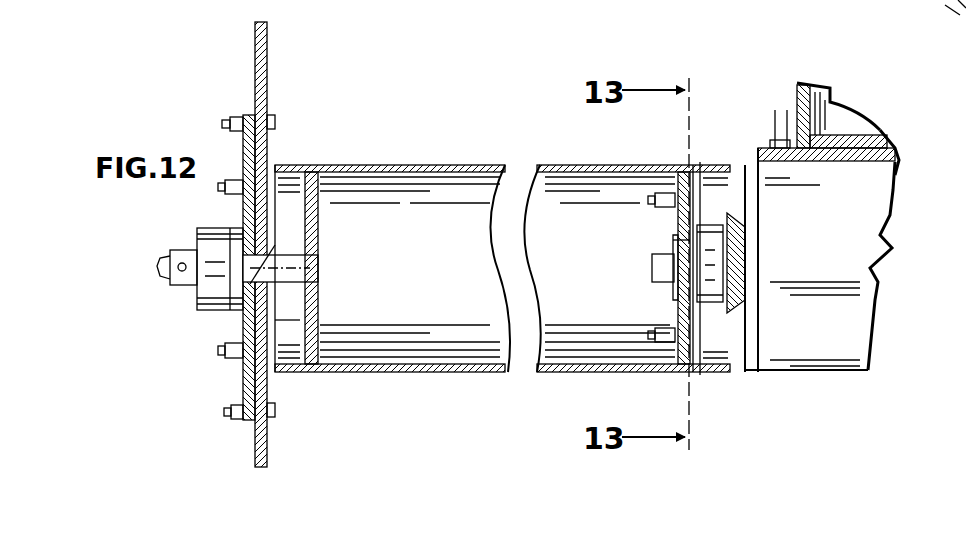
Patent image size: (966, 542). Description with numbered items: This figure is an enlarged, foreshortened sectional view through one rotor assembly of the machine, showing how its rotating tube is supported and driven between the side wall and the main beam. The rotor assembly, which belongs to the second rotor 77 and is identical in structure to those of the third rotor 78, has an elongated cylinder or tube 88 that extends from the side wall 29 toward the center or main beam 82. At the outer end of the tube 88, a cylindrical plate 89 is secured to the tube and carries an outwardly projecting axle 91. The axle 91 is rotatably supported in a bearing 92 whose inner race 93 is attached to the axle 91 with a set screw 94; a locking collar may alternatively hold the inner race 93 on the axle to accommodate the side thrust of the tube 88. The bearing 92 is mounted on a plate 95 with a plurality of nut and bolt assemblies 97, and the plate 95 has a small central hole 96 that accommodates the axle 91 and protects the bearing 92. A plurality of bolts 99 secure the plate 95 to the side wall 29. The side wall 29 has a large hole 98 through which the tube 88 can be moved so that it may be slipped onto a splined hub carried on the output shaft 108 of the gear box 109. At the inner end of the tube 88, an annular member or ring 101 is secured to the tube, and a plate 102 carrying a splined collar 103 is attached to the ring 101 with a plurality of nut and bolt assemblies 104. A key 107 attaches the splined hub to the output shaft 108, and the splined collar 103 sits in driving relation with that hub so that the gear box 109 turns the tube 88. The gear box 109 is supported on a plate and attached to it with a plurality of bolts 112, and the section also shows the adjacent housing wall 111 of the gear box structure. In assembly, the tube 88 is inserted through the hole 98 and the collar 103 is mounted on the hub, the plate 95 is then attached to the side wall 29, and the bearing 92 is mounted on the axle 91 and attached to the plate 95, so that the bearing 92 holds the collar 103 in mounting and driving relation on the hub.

The side wall 29 is at (270, 38).
The plate 95 is at (250, 114).
The bolts 99 is at (230, 123).
The nut and bolt assemblies 97 is at (223, 350).
The bearing 92 is at (222, 226).
The set screw 94 is at (183, 250).
The inner race 93 is at (183, 288).
The axle 91 is at (318, 266).
The central hole 96 is at (258, 258).
The tube 88 is at (550, 163).
The cylindrical plate 89 is at (316, 224).
The large hole 98 is at (276, 320).
The nut and bolt assemblies 104 is at (652, 200).
The annular member or ring 101 is at (650, 336).
The splined collar 103 is at (740, 263).
The key 107 is at (670, 249).
The output shaft 108 is at (652, 266).
The plate 102 is at (704, 374).
The gear box 109 is at (850, 308).
The housing wall 111 is at (895, 152).
The main beam 82 is at (812, 88).
The bolts 112 is at (774, 137).
The second rotor 77 is at (512, 122).
The third rotor 78 is at (935, 6).